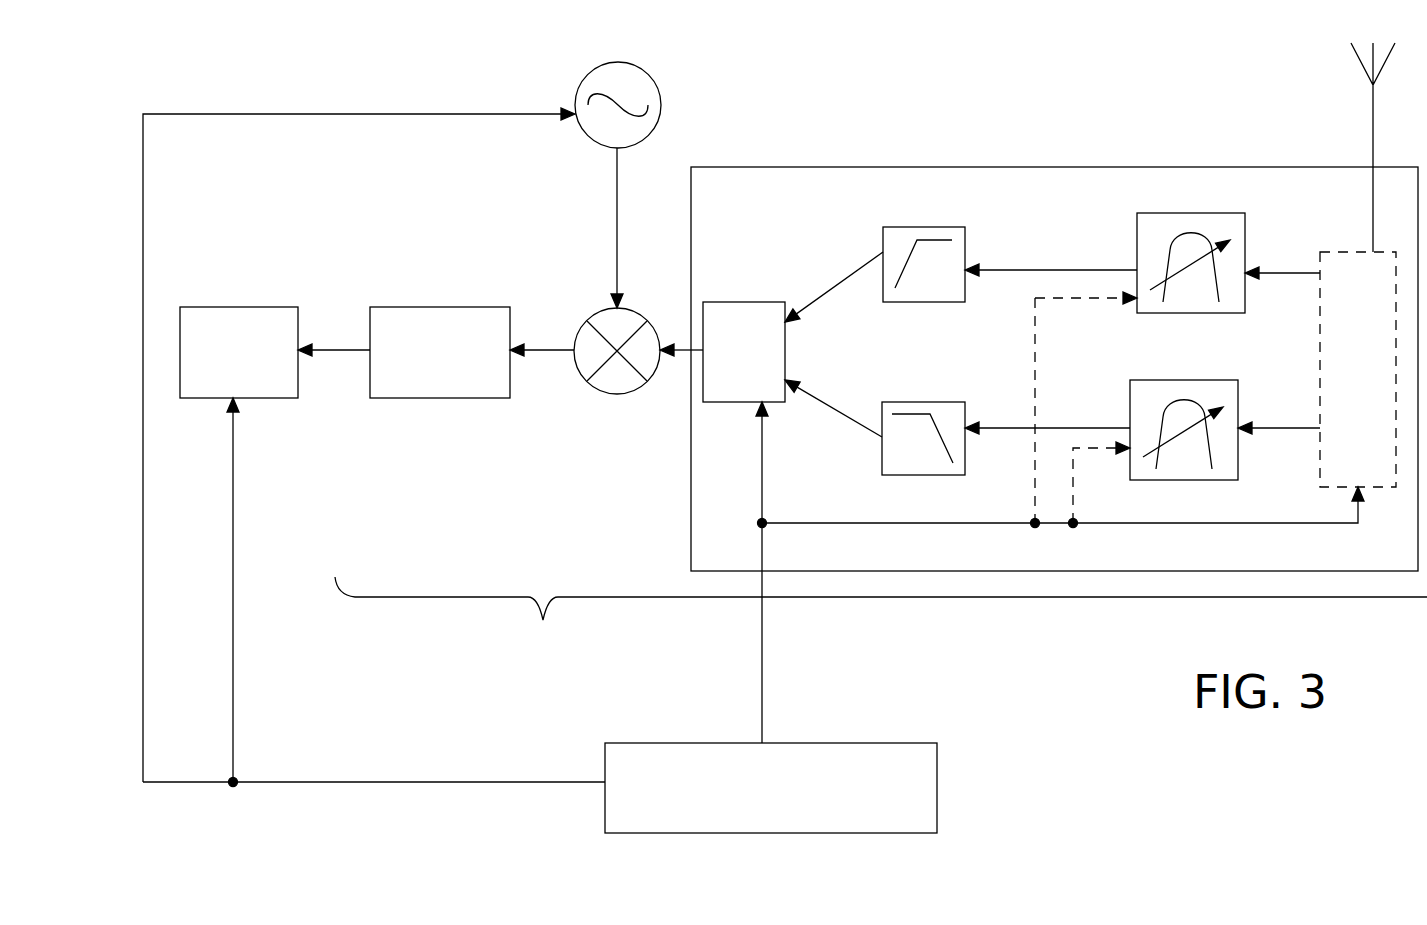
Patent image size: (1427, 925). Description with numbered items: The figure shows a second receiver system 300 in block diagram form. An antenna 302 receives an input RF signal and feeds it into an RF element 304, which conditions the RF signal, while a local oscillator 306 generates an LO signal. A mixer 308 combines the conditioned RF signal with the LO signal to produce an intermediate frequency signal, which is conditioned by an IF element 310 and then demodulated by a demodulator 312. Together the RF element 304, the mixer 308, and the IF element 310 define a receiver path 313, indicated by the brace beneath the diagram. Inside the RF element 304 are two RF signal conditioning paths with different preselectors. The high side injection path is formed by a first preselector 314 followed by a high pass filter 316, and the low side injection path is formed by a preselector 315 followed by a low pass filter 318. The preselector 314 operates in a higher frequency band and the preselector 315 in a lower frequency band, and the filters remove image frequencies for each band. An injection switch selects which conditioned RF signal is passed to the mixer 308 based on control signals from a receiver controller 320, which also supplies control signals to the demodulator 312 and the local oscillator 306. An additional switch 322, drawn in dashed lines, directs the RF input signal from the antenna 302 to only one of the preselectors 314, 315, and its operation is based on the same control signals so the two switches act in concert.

The second receiver system 300 is at (785, 438).
The antenna 302 is at (1350, 147).
The RF element 304 is at (1054, 369).
The local oscillator 306 is at (643, 105).
The mixer 308 is at (617, 375).
The IF element 310 is at (440, 333).
The demodulator 312 is at (239, 338).
The receiver path 313 is at (881, 618).
The first preselector 314 is at (1191, 245).
The preselector 315 is at (1184, 412).
The high pass filter 316 is at (924, 250).
The low pass filter 318 is at (923, 424).
The receiver controller 320 is at (771, 788).
The additional switch 322 is at (1358, 369).